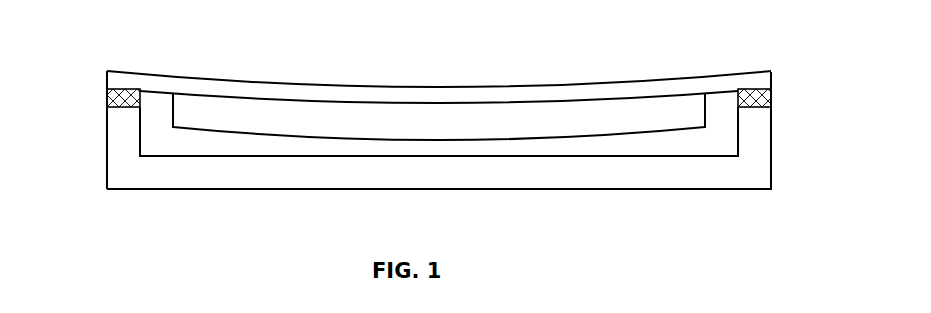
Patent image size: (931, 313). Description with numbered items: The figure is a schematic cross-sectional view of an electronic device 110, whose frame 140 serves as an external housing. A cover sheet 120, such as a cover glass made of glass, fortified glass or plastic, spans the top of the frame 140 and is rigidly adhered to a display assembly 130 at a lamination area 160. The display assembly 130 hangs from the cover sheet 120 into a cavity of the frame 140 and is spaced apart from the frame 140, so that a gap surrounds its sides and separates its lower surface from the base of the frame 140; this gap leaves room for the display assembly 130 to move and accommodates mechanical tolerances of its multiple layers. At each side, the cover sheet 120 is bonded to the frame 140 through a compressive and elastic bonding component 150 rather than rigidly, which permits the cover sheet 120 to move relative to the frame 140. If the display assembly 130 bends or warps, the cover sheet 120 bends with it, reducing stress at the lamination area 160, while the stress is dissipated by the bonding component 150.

The electronic device 110 is at (230, 209).
The cover sheet 120 is at (305, 83).
The display assembly 130 is at (212, 131).
The frame 140 is at (352, 189).
The compressive and elastic bonding component 150 is at (107, 95).
The lamination area 160 is at (440, 103).